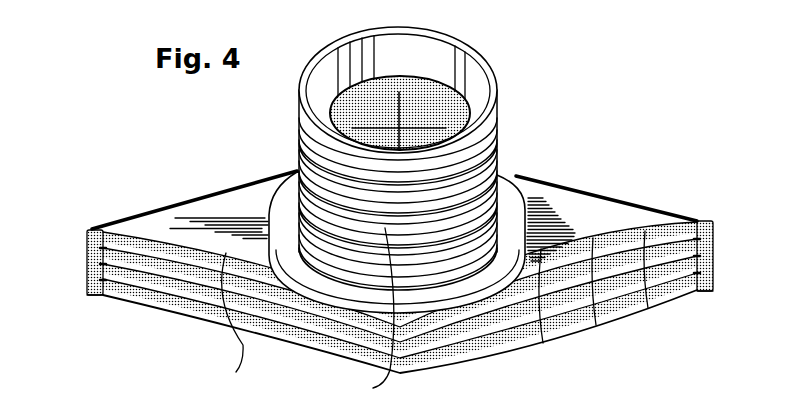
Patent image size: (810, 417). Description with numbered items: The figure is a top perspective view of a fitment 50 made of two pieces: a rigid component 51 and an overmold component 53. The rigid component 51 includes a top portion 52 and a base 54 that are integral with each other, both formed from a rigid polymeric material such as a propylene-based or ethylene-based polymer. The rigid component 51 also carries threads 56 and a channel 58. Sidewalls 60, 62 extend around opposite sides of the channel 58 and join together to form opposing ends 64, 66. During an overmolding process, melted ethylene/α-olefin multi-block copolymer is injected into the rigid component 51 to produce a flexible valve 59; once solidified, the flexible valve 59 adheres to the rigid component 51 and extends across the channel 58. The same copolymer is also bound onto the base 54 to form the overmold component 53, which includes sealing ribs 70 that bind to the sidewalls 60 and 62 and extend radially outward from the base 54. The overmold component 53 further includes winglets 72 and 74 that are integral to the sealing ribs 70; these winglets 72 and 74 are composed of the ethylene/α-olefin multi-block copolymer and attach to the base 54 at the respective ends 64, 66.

The fitment 50 is at (588, 87).
The rigid component 51 is at (597, 155).
The top portion 52 is at (267, 158).
The overmold component 53 is at (352, 52).
The base 54 is at (638, 170).
The threads 56 is at (498, 129).
The channel 58 is at (433, 82).
The flexible valve 59 is at (450, 98).
The sidewall 60 is at (229, 319).
The sidewall 62 is at (162, 223).
The end 64 is at (77, 263).
The end 66 is at (722, 257).
The sealing ribs 70 is at (497, 349).
The winglet 72 is at (85, 278).
The winglet 74 is at (713, 283).